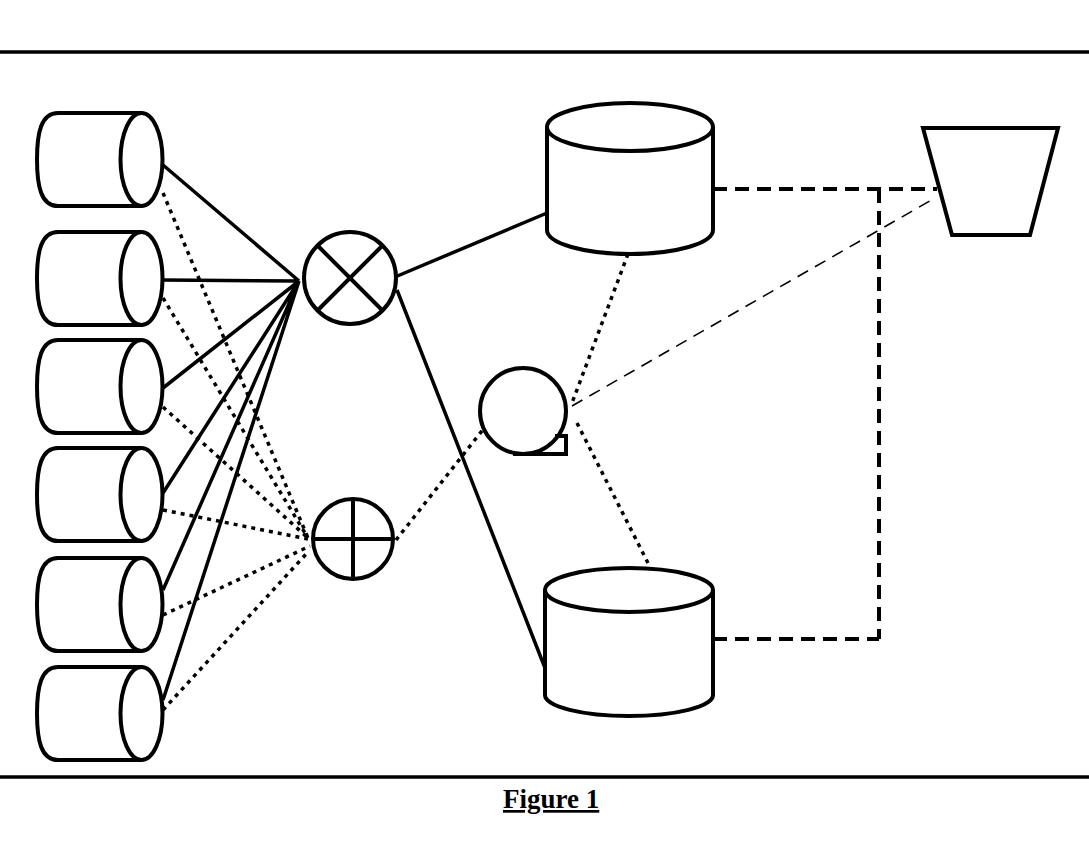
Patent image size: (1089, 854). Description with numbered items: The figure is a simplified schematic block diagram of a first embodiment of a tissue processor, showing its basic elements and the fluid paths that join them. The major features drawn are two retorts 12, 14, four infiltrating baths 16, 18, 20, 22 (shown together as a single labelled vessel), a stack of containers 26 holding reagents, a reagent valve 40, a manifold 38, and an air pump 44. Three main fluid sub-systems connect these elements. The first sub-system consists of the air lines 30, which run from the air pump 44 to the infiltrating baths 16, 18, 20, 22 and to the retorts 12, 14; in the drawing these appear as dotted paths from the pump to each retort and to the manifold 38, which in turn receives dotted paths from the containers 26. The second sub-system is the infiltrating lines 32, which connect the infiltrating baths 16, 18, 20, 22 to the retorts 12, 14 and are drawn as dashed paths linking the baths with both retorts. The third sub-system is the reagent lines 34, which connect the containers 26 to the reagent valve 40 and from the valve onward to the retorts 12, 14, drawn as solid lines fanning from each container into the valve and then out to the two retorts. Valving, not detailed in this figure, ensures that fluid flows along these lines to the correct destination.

The retort 12 is at (570, 172).
The retort 14 is at (563, 642).
The infiltrating bath 16 is at (990, 207).
The infiltrating bath 18 is at (990, 207).
The infiltrating bath 20 is at (990, 207).
The infiltrating bath 22 is at (990, 207).
The containers 26 is at (115, 413).
The air lines 30 is at (593, 340).
The infiltrating lines 32 is at (878, 262).
The reagent lines 34 is at (467, 250).
The manifold 38 is at (375, 569).
The reagent valve 40 is at (365, 250).
The air pump 44 is at (583, 397).